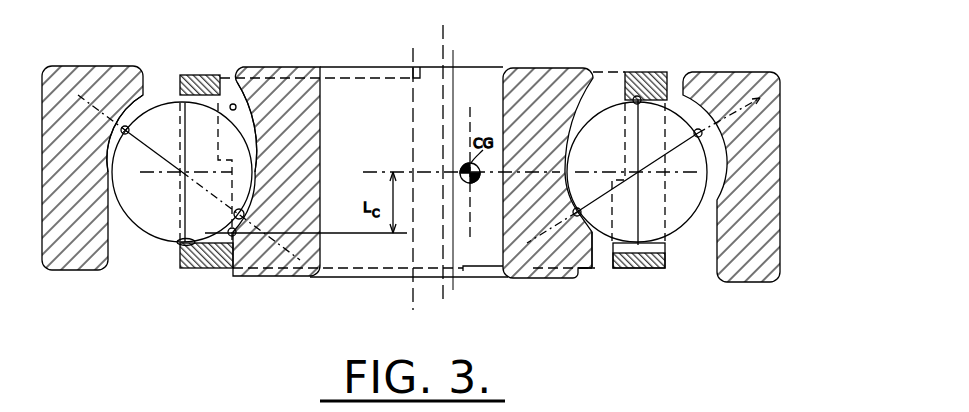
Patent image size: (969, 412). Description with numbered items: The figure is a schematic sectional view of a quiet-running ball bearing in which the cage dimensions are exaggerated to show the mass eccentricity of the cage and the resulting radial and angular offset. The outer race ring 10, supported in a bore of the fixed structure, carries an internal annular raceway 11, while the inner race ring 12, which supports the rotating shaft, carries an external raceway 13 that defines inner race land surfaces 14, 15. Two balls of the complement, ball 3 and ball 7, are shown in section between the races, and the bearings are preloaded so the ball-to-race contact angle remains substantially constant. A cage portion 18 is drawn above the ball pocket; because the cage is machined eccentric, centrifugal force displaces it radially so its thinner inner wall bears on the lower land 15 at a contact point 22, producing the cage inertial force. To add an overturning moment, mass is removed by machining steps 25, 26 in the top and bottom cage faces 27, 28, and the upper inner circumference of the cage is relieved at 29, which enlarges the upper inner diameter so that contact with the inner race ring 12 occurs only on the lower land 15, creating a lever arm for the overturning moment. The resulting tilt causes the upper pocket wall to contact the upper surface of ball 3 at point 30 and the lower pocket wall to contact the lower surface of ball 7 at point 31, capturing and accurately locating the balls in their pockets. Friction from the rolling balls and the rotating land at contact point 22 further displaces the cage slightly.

The ball 3 is at (608, 151).
The ball 7 is at (167, 136).
The outer race ring 10 is at (80, 67).
The raceway 11 is at (128, 117).
The inner race ring 12 is at (424, 171).
The raceway 13 is at (242, 92).
The inner race land surface 14 is at (231, 105).
The inner race land surface 15 is at (592, 256).
The retainer 18 is at (178, 95).
The contact point 22 is at (240, 220).
The step 25 is at (413, 72).
The step 26 is at (467, 270).
The cage face 27 is at (481, 67).
The cage face 28 is at (393, 268).
The relief 29 is at (245, 157).
The contact point 30 is at (637, 98).
The contact point 31 is at (178, 242).